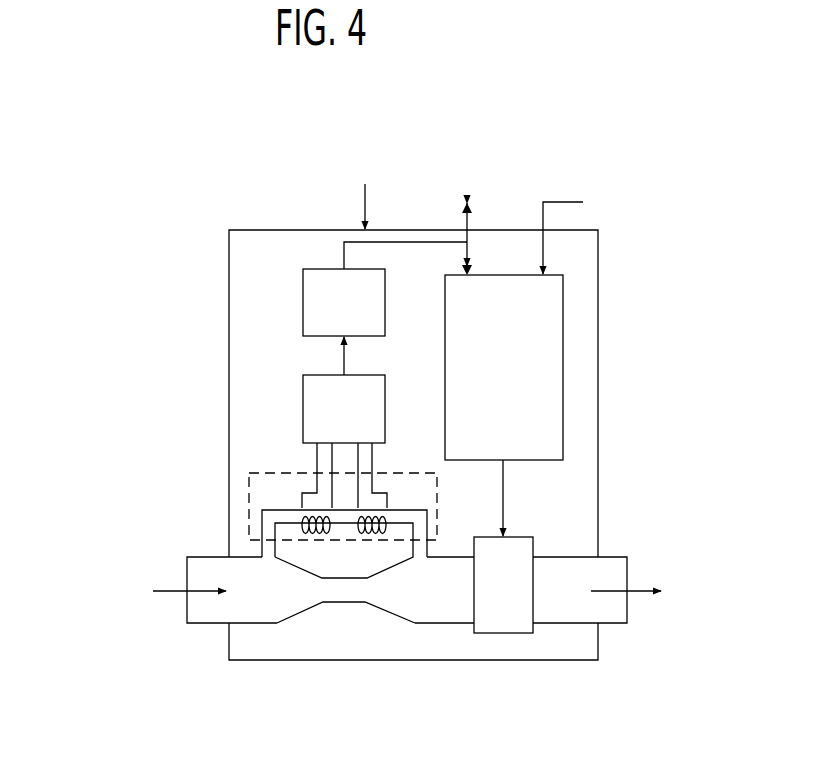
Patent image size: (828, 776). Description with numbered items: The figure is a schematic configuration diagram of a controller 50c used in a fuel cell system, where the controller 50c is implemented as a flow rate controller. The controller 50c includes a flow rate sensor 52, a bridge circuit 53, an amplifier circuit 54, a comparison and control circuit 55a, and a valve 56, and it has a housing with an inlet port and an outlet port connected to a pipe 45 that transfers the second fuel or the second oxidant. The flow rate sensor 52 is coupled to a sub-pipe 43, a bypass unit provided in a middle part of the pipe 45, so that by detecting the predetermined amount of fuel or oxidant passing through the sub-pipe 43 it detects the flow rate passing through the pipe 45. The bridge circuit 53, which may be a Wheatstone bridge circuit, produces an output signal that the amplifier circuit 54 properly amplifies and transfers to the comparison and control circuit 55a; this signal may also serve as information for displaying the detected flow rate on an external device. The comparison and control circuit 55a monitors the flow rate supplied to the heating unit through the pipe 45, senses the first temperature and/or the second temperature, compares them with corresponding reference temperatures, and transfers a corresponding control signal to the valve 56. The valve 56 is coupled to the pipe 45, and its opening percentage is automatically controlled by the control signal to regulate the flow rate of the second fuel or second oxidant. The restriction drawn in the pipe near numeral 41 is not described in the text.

The controller 50c is at (269, 182).
The amplifier circuit 54 is at (303, 300).
The bridge circuit 53 is at (303, 407).
The comparison and control circuit 55a is at (563, 366).
The valve 56 is at (533, 545).
The flow rate sensor 52 is at (249, 490).
The sub-pipe 43 is at (362, 508).
The valve body / venturi 41 is at (343, 597).
The pipe 45 is at (442, 623).